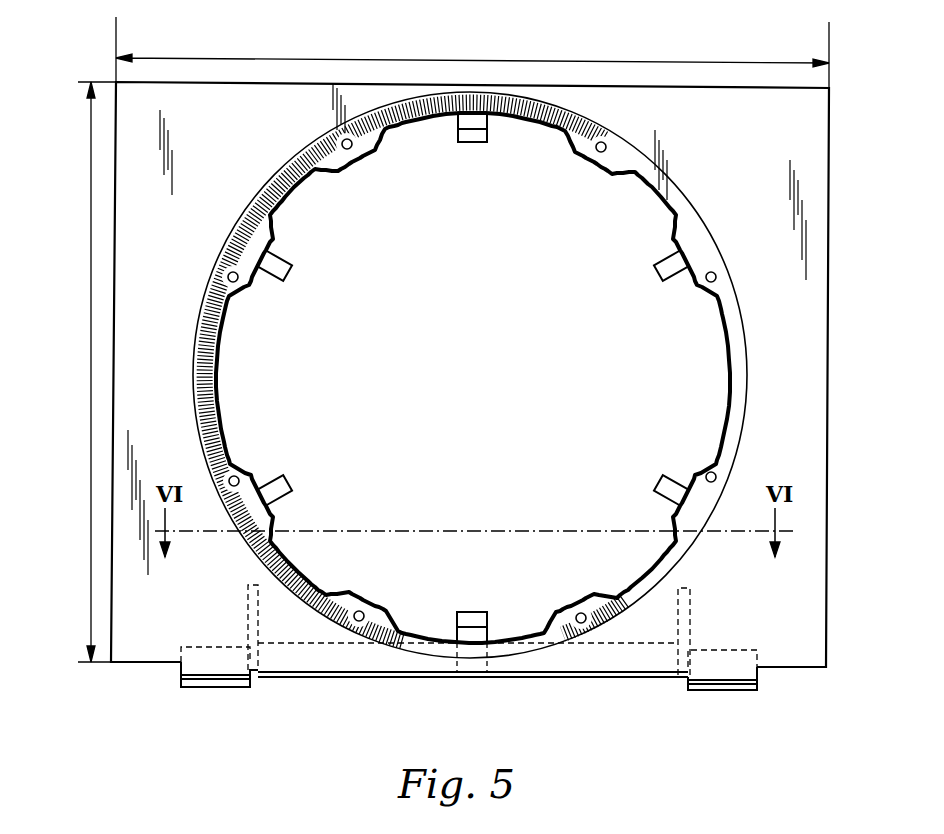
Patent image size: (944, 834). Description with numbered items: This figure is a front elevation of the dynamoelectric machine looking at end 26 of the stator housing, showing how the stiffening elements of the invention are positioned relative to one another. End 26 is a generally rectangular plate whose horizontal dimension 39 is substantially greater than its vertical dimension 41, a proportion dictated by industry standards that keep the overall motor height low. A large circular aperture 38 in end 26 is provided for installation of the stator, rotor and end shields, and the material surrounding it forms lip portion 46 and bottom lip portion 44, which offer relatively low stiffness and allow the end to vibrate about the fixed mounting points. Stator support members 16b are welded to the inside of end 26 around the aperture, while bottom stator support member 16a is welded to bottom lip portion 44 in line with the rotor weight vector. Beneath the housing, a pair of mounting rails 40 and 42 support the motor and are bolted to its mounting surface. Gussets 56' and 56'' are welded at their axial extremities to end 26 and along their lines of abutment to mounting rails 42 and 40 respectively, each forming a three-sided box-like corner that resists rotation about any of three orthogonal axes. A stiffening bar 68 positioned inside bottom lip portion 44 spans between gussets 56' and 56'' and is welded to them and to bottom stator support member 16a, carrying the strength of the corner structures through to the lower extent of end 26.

The second end 26 is at (798, 465).
The horizontal dimension 39 is at (456, 50).
The vertical dimension 41 is at (91, 383).
The lip portion 46 is at (515, 104).
The aperture 38 is at (344, 596).
The stator support member 16b is at (470, 148).
The bottom stator support member 16a is at (478, 612).
The bottom lip portion 44 is at (502, 660).
The stiffening bar 68 is at (392, 652).
The mounting rail 40 is at (180, 683).
The mounting rail 42 is at (760, 683).
The gusset 56'' is at (219, 627).
The gusset 56' is at (717, 631).